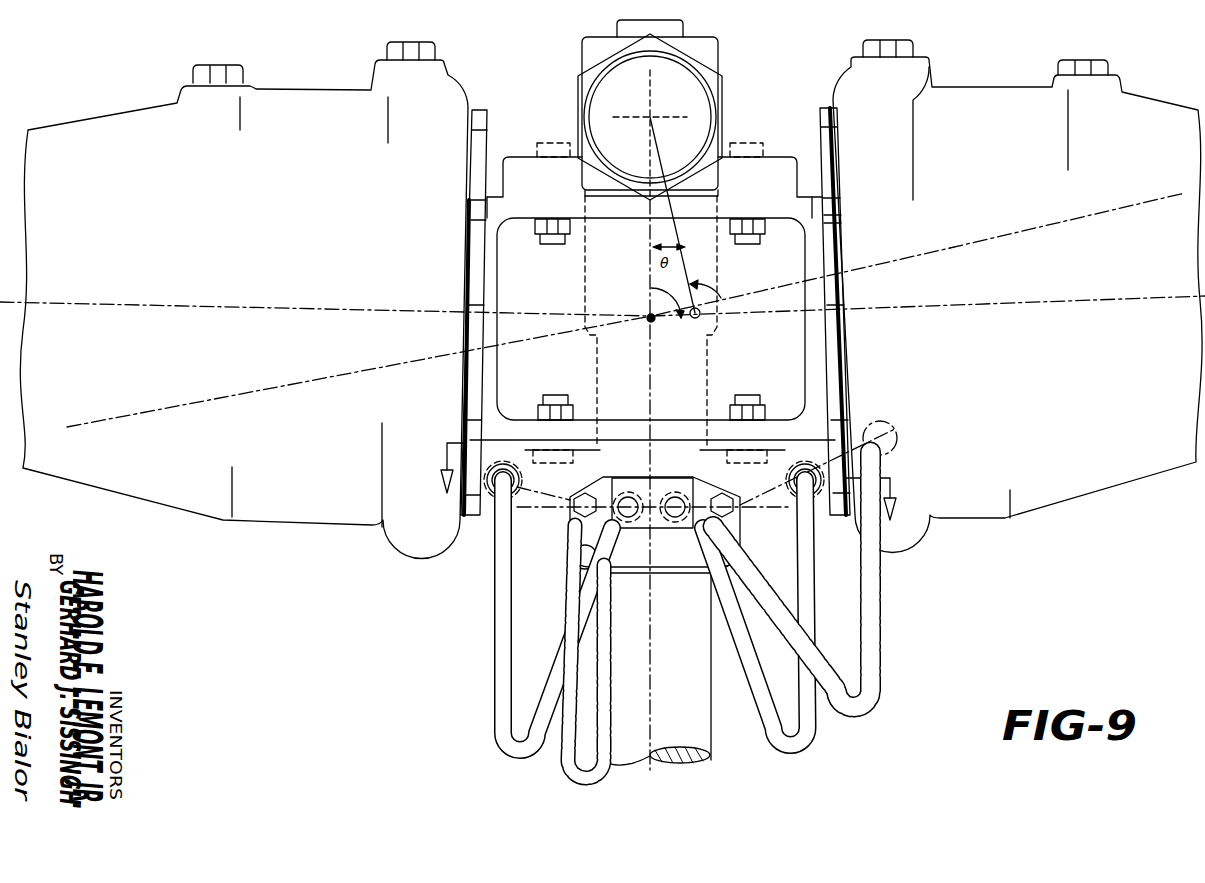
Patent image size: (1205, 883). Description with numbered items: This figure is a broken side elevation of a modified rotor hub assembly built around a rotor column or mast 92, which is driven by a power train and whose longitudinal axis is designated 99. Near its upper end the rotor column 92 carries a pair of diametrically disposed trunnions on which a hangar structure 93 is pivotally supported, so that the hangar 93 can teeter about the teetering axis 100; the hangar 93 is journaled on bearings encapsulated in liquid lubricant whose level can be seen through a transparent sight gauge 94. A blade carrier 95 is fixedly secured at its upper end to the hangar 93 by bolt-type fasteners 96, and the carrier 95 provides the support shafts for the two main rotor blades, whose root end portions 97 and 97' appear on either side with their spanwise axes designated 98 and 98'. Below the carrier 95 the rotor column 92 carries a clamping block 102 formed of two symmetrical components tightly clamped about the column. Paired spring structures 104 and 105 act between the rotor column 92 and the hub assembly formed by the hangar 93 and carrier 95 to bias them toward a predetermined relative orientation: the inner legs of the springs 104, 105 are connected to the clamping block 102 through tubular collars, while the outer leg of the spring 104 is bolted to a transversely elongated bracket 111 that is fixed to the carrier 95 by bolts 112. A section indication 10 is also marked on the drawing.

The section line of FIG. 10 is at (673, 492).
The rotor column 92 is at (714, 755).
The hangar structure 93 is at (738, 125).
The transparent sight gauge 94 is at (690, 78).
The blade carrier 95 is at (840, 190).
The bolt-type fasteners 96 is at (760, 152).
The rotor blade 97 is at (1017, 296).
The rotor blade 97' is at (244, 309).
The spanwise axis 98 is at (928, 326).
The spanwise axis 98' is at (592, 310).
The longitudinal axis 99 is at (645, 748).
The teetering axis 100 is at (650, 117).
The clamping block 102 is at (670, 575).
The spring 104 is at (880, 690).
The spring 105 is at (494, 742).
The bracket 111 is at (808, 440).
The bolts 112 is at (745, 405).